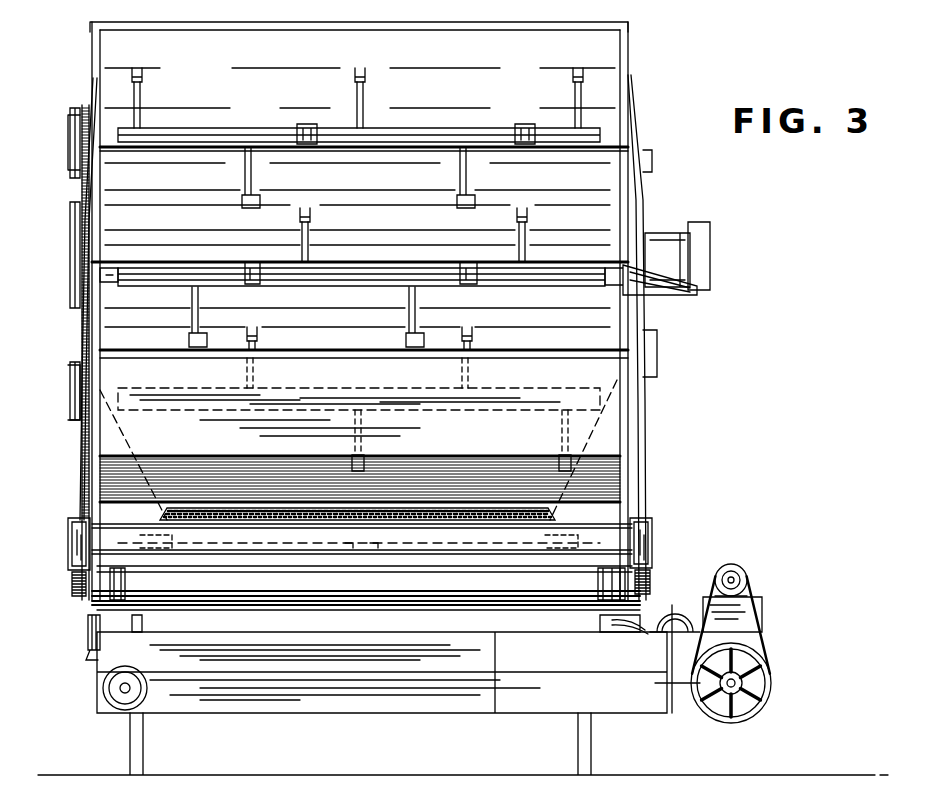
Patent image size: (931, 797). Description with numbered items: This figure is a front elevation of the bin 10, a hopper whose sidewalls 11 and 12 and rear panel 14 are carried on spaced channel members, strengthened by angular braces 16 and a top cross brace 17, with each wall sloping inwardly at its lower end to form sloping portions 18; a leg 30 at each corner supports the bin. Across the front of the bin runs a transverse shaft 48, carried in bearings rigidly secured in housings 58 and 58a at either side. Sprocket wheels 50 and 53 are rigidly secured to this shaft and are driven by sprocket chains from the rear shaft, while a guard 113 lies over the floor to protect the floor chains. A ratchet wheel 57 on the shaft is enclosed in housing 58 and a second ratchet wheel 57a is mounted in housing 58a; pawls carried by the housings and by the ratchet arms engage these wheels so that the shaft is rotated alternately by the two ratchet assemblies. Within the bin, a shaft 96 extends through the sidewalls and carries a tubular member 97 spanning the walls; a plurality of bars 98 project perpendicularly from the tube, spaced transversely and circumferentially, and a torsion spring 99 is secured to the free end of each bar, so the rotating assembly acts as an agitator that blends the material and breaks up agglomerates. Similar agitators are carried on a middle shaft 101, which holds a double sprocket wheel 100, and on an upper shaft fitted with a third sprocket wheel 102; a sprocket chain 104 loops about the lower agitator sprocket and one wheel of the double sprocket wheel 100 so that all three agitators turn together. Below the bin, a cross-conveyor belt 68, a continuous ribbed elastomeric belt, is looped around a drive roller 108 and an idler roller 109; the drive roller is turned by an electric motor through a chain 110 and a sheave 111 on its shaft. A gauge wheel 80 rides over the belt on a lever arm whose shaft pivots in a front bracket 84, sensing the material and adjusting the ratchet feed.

The bin 10 is at (664, 92).
The sidewall 11 is at (636, 192).
The sidewall 12 is at (85, 186).
The rear panel 14 is at (390, 181).
The angular braces 16 is at (645, 166).
The top cross brace 17 is at (600, 24).
The sloping portions 18 is at (598, 437).
The leg 30 is at (578, 740).
The shaft 48 is at (268, 578).
The sprocket wheel 50 is at (612, 572).
The sprocket wheel 53 is at (115, 568).
The ratchet wheel 57 is at (650, 580).
The ratchet wheel 57a is at (74, 582).
The housing 58 is at (645, 533).
The housing 58a is at (74, 532).
The cross-conveyor belt 68 is at (438, 659).
The gauge wheel 80 is at (676, 614).
The front bracket 84 is at (606, 632).
The shaft 96 is at (607, 390).
The tubular member 97 is at (437, 130).
The bars 98 is at (357, 100).
The torsion spring 99 is at (363, 76).
The double sprocket wheel 100 is at (82, 274).
The shaft 101 is at (113, 282).
The sprocket wheel 102 is at (82, 142).
The sprocket chain 104 is at (82, 336).
The drive roller 108 is at (745, 700).
The idler roller 109 is at (110, 690).
The chain 110 is at (762, 610).
The sheave 111 is at (773, 688).
The guard 113 is at (360, 543).